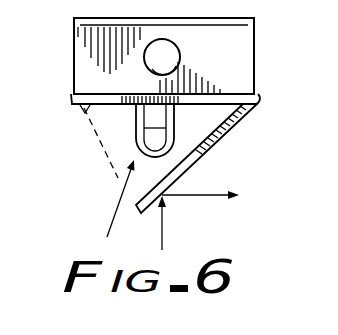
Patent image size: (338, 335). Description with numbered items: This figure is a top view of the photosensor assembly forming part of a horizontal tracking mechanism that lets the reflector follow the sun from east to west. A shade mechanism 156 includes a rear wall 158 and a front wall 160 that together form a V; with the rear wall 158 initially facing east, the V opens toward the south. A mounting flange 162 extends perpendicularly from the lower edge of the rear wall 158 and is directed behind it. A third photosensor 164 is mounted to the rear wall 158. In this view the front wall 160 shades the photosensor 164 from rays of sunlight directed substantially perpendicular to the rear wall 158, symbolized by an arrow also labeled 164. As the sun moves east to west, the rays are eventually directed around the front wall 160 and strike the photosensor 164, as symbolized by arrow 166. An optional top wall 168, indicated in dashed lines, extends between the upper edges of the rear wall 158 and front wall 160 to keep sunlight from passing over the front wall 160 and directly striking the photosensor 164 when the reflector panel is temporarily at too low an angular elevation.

The shade mechanism 156 is at (254, 128).
The rear wall 158 is at (83, 112).
The front wall 160 is at (198, 148).
The mounting flange 162 is at (237, 33).
The third photosensor 164 is at (137, 146).
The arrow 166 is at (108, 226).
The top wall 168 is at (78, 138).